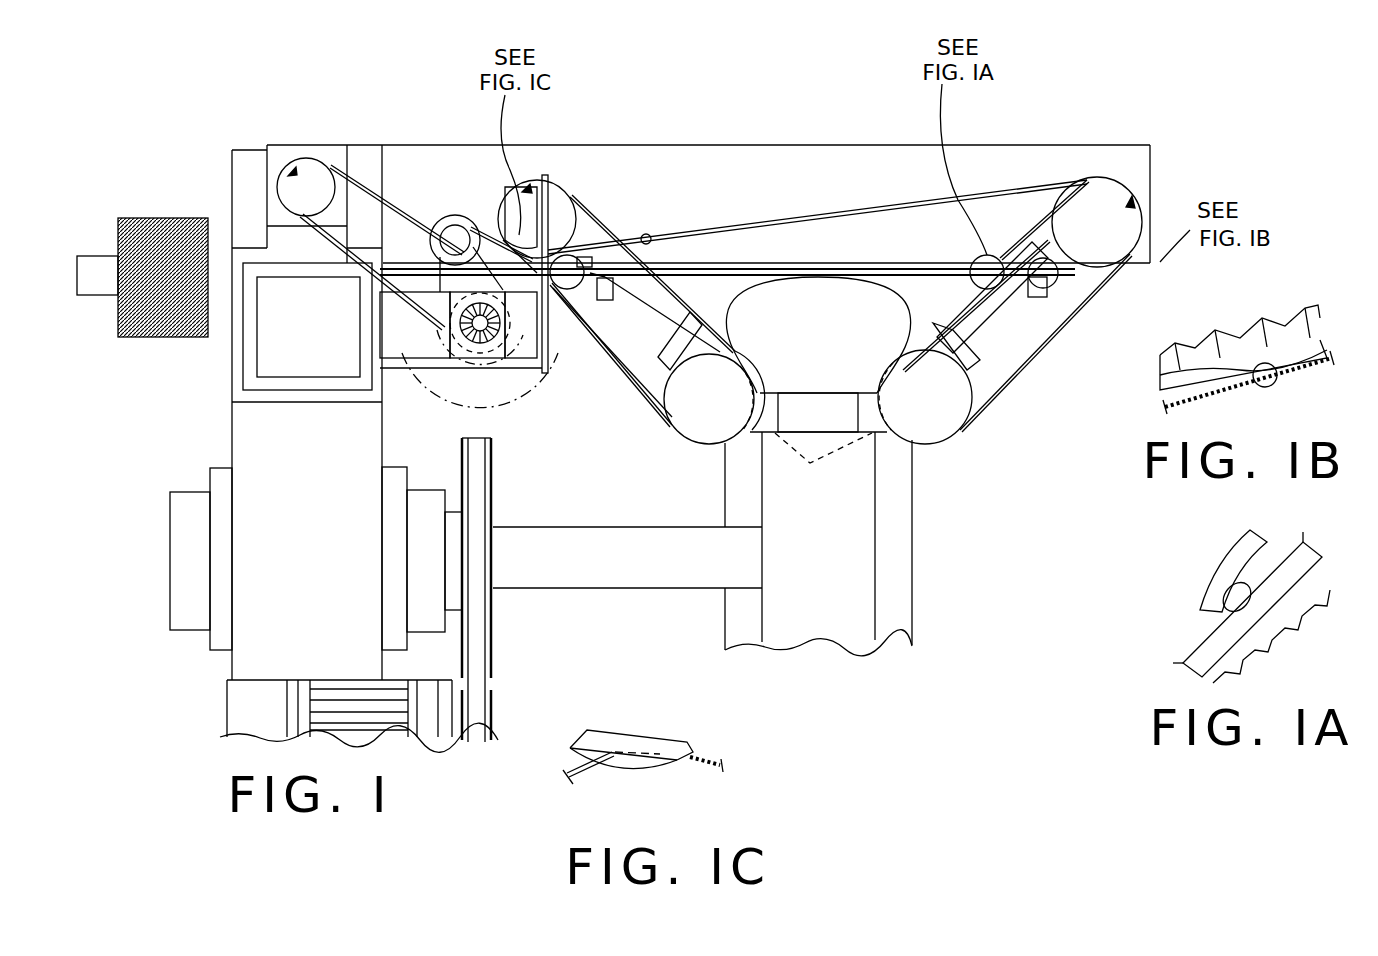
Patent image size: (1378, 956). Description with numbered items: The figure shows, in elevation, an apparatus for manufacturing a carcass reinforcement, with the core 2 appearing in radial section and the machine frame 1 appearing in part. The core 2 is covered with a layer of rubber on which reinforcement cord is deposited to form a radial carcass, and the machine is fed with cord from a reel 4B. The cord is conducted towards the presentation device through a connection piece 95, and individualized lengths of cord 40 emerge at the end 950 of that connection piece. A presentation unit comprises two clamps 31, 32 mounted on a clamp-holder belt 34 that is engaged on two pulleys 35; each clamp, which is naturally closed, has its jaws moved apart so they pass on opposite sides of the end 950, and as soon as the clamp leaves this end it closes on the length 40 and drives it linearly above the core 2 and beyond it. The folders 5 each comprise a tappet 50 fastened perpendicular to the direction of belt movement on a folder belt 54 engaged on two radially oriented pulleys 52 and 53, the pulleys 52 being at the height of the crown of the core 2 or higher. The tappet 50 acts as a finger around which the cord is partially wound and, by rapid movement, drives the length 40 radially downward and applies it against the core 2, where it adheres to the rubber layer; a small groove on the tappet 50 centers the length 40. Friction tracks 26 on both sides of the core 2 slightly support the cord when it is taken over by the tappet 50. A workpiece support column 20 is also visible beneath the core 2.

In FIG. 1, the frame 1 is at (240, 157).
In FIG. 1, the core 2 is at (830, 326).
In FIG. 1, the reel 4B is at (160, 343).
In FIG. 1, the folders 5 is at (620, 405).
In FIG. 1, the workpiece support 20 is at (905, 625).
In FIG. 1, the friction tracks 26 is at (608, 327).
In FIG. 1B, the clamp 31 is at (1272, 380).
In FIG. 1, the clamp 32 is at (640, 230).
In FIG. 1, the clamp-holder belt 34 is at (713, 268).
In FIG. 1B, the clamp-holder belt 34 is at (1190, 350).
In FIG. 1, the pulleys 35 is at (455, 215).
In FIG. 1, the length of cord 40 is at (952, 281).
In FIG. 1C, the length of cord 40 is at (705, 768).
In FIG. 1A, the tappet 50 is at (1215, 570).
In FIG. 1, the pulley 52 is at (572, 187).
In FIG. 1, the pulley 53 is at (684, 420).
In FIG. 1, the folder belt 54 is at (1050, 250).
In FIG. 1A, the folder belt 54 is at (1305, 592).
In FIG. 1C, the connection piece 95 is at (580, 775).
In FIG. 1C, the end of the connection piece 950 is at (628, 735).